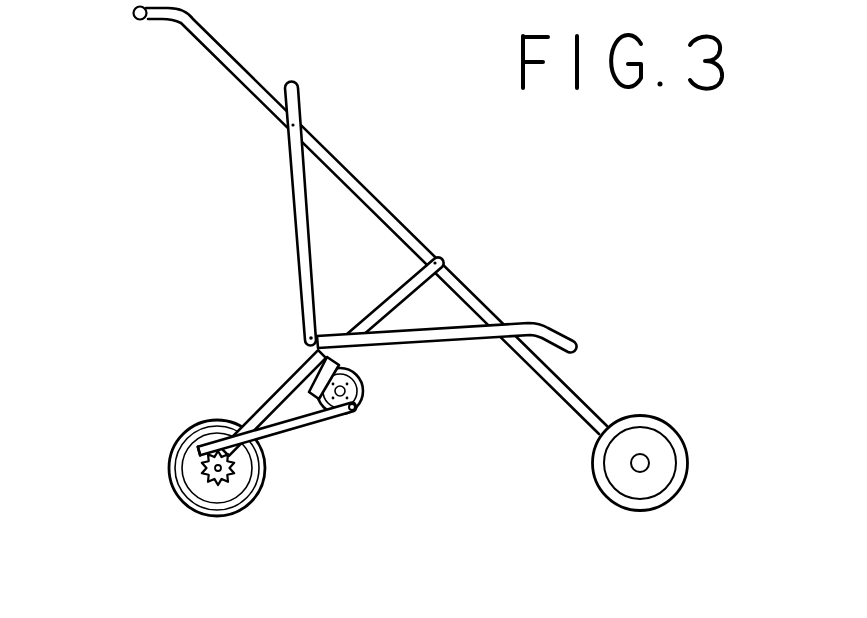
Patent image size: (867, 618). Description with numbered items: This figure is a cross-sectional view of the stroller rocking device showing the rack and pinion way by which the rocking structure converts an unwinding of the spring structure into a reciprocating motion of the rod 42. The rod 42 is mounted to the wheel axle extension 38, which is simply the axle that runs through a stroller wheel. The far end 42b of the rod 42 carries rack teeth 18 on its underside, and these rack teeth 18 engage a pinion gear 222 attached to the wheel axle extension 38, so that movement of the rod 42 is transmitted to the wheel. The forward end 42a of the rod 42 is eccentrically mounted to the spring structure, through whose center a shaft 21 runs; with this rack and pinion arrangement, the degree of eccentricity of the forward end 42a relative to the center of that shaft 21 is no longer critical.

The rack teeth 18 is at (223, 450).
The shaft 21 is at (352, 378).
The wheel axle extension 38 is at (224, 476).
The rod 42 is at (297, 430).
The forward end of rod 42a is at (352, 414).
The far end of rod 42b is at (197, 447).
The pinion gear 222 is at (212, 477).